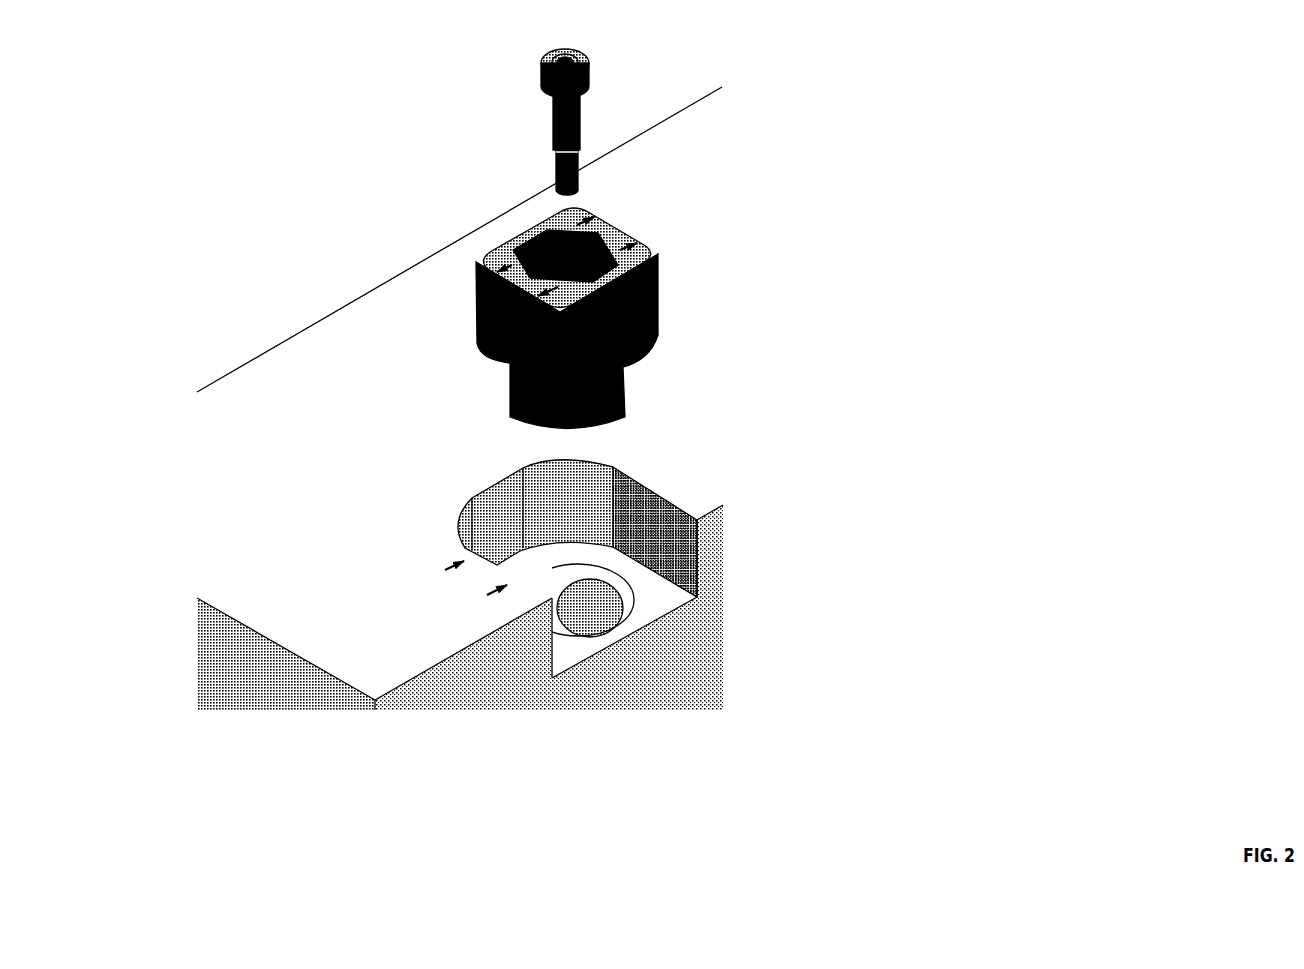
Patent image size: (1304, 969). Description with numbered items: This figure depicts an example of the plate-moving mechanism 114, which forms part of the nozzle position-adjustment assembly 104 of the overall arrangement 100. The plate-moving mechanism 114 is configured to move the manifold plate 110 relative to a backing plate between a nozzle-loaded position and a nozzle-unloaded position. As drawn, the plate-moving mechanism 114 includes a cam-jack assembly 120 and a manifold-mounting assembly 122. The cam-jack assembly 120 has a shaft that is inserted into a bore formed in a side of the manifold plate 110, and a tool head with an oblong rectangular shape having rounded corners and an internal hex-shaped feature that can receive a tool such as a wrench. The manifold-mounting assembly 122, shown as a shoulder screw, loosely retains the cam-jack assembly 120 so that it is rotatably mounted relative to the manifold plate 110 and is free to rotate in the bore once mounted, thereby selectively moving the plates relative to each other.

The assembly 100 is at (1159, 680).
The nozzle position-adjustment assembly 104 is at (1158, 660).
The manifold plate 110 is at (672, 678).
The plate-moving mechanism 114 is at (730, 172).
The cam-jack assembly 120 is at (658, 328).
The manifold-mounting assembly 122 is at (582, 125).